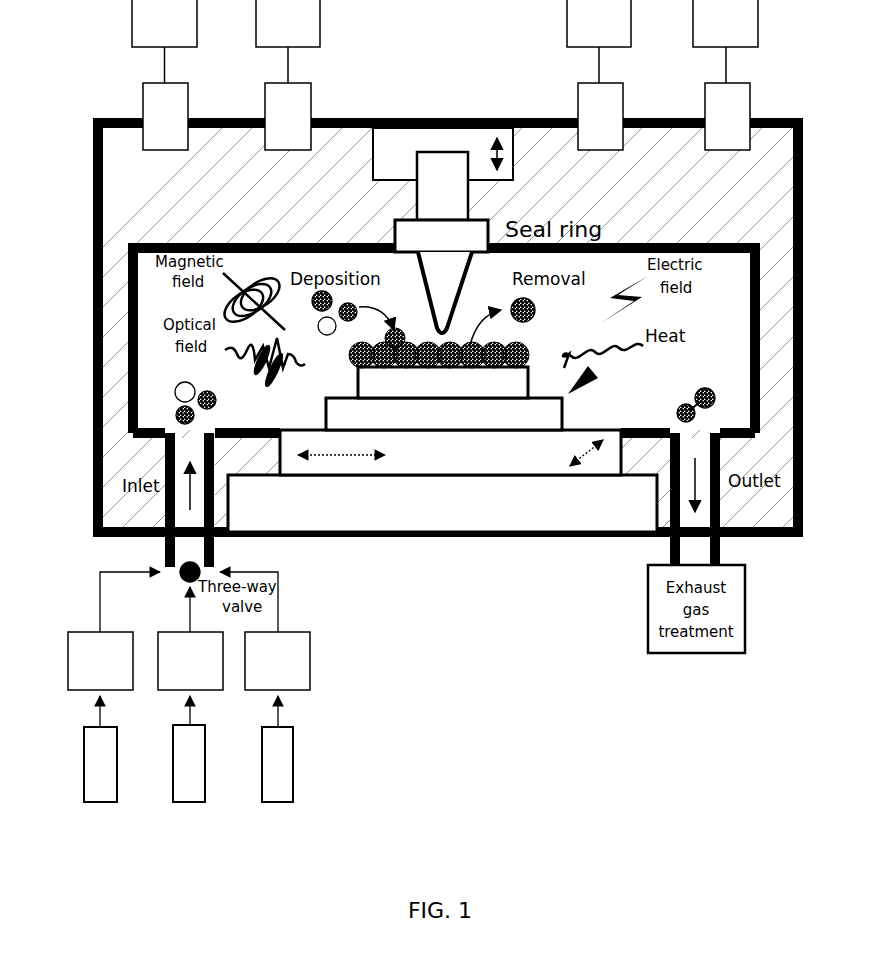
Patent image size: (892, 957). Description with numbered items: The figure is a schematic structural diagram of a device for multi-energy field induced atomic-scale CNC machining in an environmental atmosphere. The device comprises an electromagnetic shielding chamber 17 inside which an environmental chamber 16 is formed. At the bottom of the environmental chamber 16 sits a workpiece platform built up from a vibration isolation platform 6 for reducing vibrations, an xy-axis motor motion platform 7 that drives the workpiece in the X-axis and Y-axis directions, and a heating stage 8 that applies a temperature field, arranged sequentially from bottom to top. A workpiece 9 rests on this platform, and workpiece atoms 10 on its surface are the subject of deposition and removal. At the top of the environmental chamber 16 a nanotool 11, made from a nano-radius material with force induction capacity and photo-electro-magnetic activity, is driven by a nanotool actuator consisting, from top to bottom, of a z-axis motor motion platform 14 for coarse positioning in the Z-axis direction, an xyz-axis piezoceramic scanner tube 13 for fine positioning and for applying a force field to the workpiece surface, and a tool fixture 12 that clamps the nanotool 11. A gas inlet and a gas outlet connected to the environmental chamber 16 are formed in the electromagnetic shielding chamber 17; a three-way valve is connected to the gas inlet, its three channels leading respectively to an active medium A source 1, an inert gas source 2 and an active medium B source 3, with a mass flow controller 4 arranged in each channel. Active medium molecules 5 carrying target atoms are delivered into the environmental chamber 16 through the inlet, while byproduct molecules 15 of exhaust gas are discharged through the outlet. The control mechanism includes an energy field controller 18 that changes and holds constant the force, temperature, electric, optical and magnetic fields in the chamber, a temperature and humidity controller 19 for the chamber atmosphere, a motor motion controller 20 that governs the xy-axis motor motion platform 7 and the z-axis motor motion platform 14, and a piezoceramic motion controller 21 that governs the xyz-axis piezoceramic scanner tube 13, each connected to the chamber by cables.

The active medium A source 1 is at (277, 769).
The inert gas source 2 is at (189, 769).
The active medium B source 3 is at (105, 769).
The mass flow controller 4 is at (189, 631).
The active medium molecule 5 is at (184, 403).
The vibration isolation platform 6 is at (442, 503).
The xy-axis motor motion platform 7 is at (450, 452).
The heating stage 8 is at (444, 414).
The workpiece 9 is at (443, 382).
The workpiece atoms 10 is at (428, 348).
The nanotool 11 is at (445, 292).
The tool fixture 12 is at (441, 236).
The xyz-axis piezoceramic scanner tube 13 is at (442, 186).
The z-axis motor motion platform 14 is at (443, 154).
The byproduct molecule 15 is at (709, 405).
The environmental chamber 16 is at (444, 340).
The electromagnetic shielding chamber 17 is at (448, 327).
The energy field controller 18 is at (164, 75).
The temperature and humidity controller 19 is at (288, 75).
The motor motion controller 20 is at (599, 75).
The piezoceramic motion controller 21 is at (725, 75).